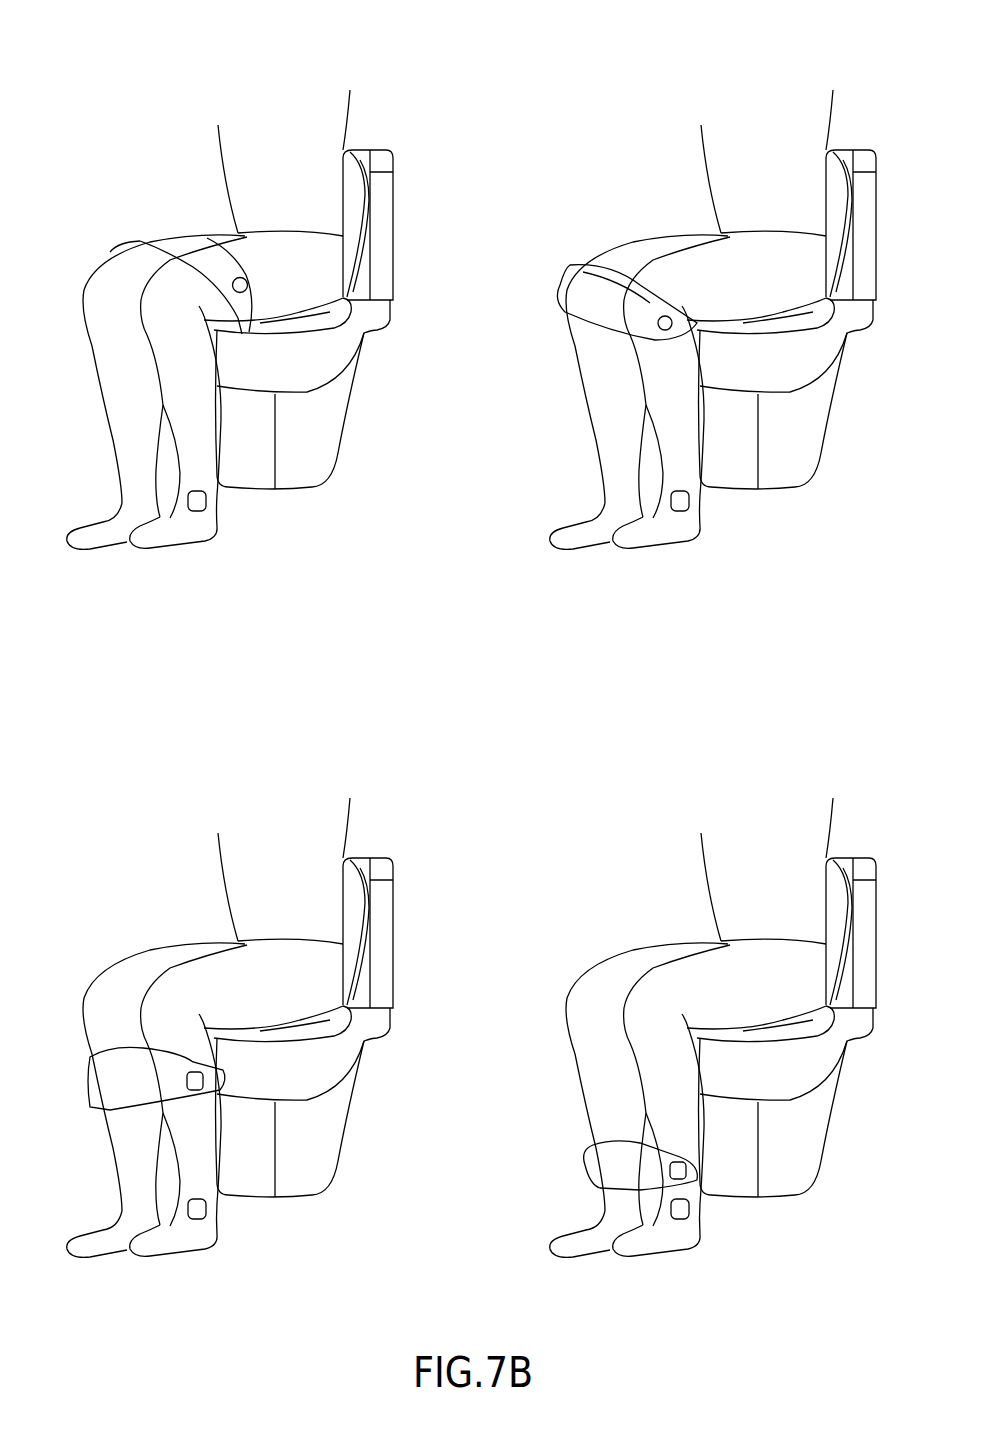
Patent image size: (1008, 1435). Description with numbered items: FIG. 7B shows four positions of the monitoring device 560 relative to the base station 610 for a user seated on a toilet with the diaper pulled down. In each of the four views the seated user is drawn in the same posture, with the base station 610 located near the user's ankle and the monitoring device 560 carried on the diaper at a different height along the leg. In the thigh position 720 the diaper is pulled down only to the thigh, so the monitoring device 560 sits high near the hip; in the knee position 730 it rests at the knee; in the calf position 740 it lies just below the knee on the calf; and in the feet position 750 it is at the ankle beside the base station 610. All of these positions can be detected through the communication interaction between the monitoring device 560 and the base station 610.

The thigh position 720 is at (236, 82).
The knee position 730 is at (713, 284).
The calf position 740 is at (230, 996).
The feet position 750 is at (713, 996).
The monitoring device 560 is at (140, 240).
The base station 610 is at (220, 507).